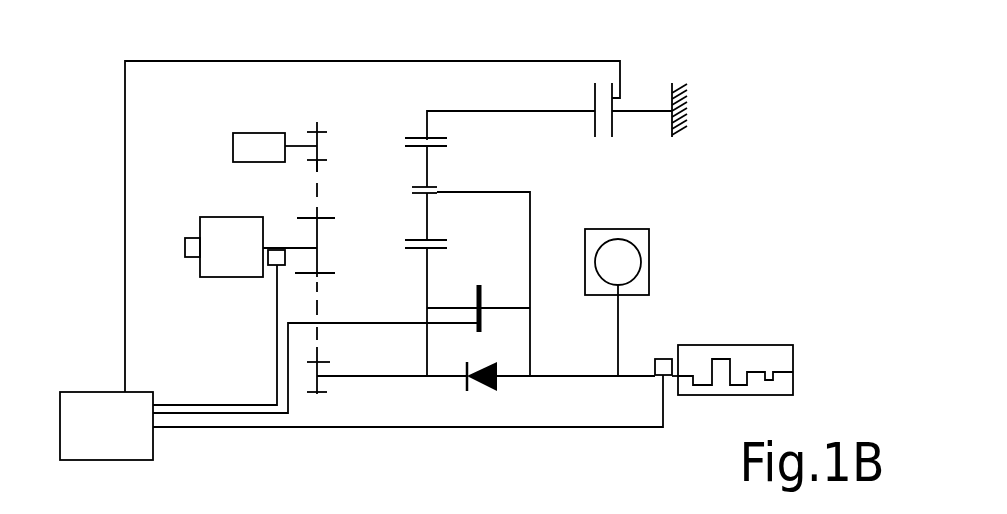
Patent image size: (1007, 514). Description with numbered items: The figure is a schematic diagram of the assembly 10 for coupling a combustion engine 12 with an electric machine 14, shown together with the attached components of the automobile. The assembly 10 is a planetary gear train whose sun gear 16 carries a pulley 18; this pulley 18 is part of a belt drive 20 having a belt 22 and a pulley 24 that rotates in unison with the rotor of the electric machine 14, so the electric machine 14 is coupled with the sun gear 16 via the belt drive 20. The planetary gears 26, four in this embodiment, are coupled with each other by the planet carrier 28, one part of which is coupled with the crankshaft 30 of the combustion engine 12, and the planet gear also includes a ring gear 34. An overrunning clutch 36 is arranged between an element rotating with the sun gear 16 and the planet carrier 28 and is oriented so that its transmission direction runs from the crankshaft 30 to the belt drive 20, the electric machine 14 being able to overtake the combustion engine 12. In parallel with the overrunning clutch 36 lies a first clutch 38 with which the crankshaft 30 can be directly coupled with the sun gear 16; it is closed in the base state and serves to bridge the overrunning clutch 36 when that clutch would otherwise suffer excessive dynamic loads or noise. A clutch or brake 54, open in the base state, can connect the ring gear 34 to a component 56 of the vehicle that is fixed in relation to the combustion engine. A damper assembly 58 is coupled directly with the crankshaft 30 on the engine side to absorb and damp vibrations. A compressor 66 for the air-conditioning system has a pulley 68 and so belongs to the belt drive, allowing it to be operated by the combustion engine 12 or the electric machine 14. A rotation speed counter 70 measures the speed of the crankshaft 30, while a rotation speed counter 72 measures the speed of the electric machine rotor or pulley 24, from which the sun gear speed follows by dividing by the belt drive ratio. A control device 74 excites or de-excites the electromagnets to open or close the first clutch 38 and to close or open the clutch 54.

The assembly 10 is at (417, 92).
The combustion engine 12 is at (773, 370).
The electric machine 14 is at (222, 232).
The sun gear 16 is at (383, 377).
The pulley 18 is at (318, 372).
The belt drive 20 is at (338, 306).
The belt 22 is at (317, 190).
The pulley 24 is at (317, 253).
The planetary gears 26 is at (427, 167).
The planet carrier 28 is at (518, 192).
The crankshaft 30 is at (588, 377).
The ring gear 34 is at (485, 111).
The overrunning clutch 36 is at (483, 388).
The first clutch 38 is at (479, 287).
The clutch 54 is at (603, 120).
The component 56 is at (687, 104).
The damper assembly 58 is at (652, 247).
The compressor 66 is at (260, 150).
The pulley 68 is at (320, 132).
The rotation speed counter 70 is at (665, 358).
The rotation speed counter 72 is at (273, 265).
The control device 74 is at (361, 260).